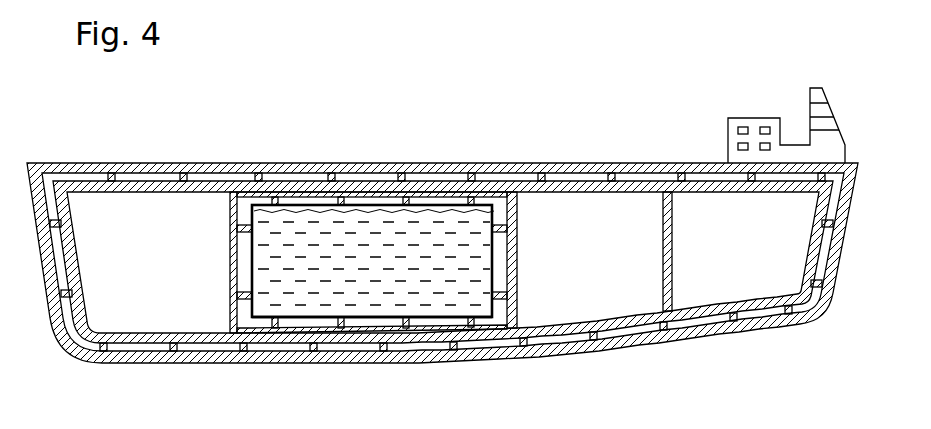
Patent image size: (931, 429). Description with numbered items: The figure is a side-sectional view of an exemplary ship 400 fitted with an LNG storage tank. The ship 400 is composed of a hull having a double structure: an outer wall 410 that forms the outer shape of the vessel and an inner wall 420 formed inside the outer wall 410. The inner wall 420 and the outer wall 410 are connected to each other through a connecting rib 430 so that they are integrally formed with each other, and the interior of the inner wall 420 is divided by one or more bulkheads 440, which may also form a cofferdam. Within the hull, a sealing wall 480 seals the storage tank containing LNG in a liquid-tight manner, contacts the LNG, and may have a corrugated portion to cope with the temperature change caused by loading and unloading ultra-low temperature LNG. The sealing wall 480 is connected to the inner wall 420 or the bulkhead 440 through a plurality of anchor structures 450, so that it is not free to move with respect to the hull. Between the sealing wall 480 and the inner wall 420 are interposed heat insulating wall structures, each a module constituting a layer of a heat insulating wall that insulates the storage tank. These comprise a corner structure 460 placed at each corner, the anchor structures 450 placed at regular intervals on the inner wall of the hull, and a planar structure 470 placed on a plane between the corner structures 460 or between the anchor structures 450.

The ship 400 is at (272, 135).
The outer wall 410 is at (305, 363).
The inner wall 420 is at (255, 340).
The connecting rib 430 is at (545, 356).
The bulkhead 440 is at (230, 203).
The anchor structure 450 is at (487, 333).
The corner structure 460 is at (242, 311).
The planar structure 470 is at (387, 329).
The sealing wall 480 is at (453, 324).